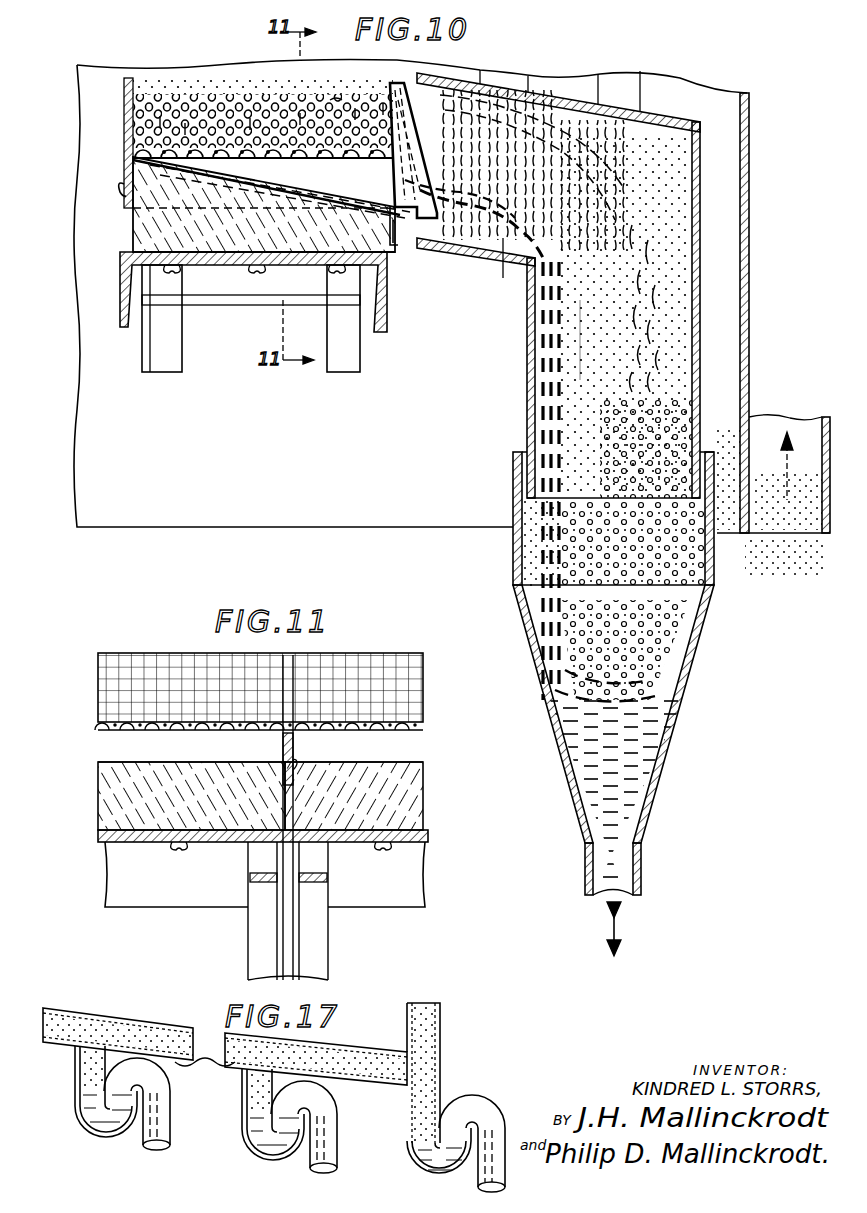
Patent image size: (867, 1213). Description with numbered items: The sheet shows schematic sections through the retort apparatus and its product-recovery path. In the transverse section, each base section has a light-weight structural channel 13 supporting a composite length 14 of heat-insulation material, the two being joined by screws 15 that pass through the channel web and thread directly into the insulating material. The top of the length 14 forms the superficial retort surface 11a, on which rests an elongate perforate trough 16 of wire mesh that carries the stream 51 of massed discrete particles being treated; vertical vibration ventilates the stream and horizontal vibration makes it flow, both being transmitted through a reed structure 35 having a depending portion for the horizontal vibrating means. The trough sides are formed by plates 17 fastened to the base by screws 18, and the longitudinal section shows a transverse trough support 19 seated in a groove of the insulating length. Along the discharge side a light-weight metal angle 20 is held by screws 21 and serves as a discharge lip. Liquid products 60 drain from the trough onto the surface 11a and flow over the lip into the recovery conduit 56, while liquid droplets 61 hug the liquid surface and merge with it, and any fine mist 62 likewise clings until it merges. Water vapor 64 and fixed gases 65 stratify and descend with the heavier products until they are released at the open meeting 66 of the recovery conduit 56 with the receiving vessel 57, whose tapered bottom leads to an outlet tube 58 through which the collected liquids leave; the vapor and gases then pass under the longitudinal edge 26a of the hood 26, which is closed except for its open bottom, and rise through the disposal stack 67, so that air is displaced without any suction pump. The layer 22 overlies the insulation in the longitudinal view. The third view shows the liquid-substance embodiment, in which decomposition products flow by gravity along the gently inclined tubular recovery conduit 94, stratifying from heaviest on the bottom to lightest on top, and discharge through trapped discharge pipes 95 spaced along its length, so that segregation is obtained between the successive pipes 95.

In FIG. 10, the superficial retort surface 11a is at (265, 180).
In FIG. 10, the light-weight structural channel 13 is at (120, 292).
In FIG. 11, the light-weight structural channel 13 is at (118, 866).
In FIG. 10, the composite length of heat-insulation material 14 is at (138, 232).
In FIG. 11, the composite length of heat-insulation material 14 is at (108, 806).
In FIG. 10, the screws 15 is at (332, 272).
In FIG. 11, the screws 15 is at (178, 850).
In FIG. 10, the elongate perforate trough 16 is at (180, 155).
In FIG. 11, the elongate perforate trough 16 is at (108, 722).
In FIG. 10, the plates 17 is at (132, 117).
In FIG. 10, the screws 18 is at (122, 186).
In FIG. 11, the transverse trough support 19 is at (288, 700).
In FIG. 10, the light-weight metal angle 20 is at (418, 228).
In FIG. 10, the screws 21 is at (402, 245).
In FIG. 11, the layer 22 is at (115, 745).
In FIG. 10, the hood 26 is at (749, 138).
In FIG. 10, the longitudinal edge of hood 26a is at (745, 540).
In FIG. 10, the reed structure 35 is at (185, 344).
In FIG. 11, the reed structure 35 is at (246, 940).
In FIG. 10, the stream of massed discrete particles 51 is at (338, 100).
In FIG. 10, the recovery conduit 56 is at (530, 386).
In FIG. 10, the receiving vessel 57 is at (688, 693).
In FIG. 10, the outlet tube 58 is at (641, 870).
In FIG. 10, the liquid products 60 is at (342, 196).
In FIG. 10, the liquid droplets 61 is at (505, 275).
In FIG. 10, the fine mist 62 is at (600, 345).
In FIG. 10, the water vapor 64 is at (652, 372).
In FIG. 10, the fixed gases 65 is at (622, 172).
In FIG. 10, the open meeting 66 is at (704, 440).
In FIG. 10, the disposal stack 67 is at (800, 440).
In FIG. 17, the tubular recovery conduit 94 is at (230, 1030).
In FIG. 17, the trapped discharge pipe 95 is at (77, 1100).